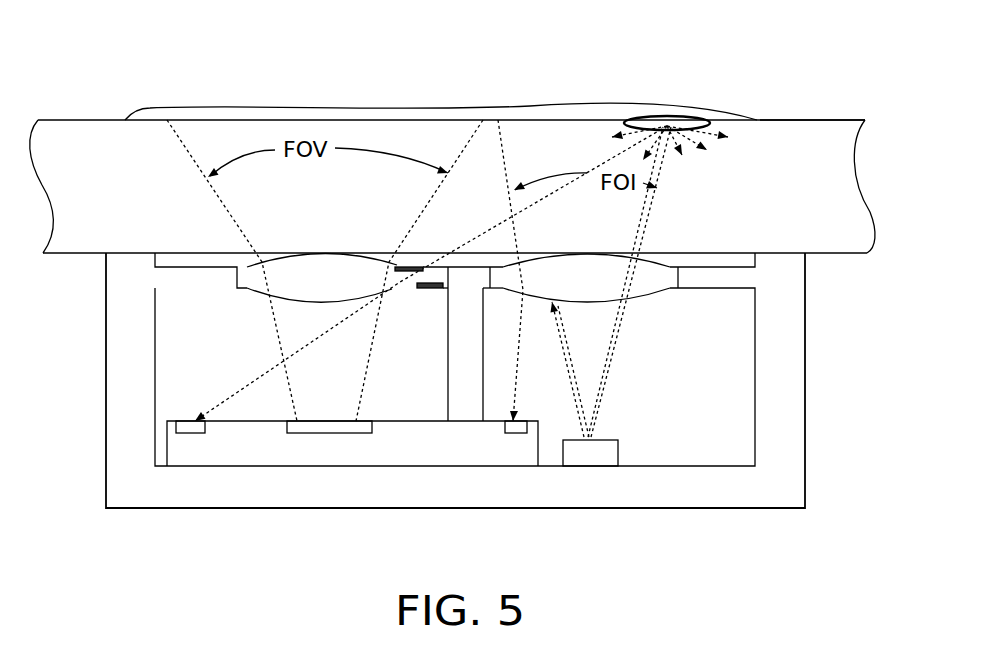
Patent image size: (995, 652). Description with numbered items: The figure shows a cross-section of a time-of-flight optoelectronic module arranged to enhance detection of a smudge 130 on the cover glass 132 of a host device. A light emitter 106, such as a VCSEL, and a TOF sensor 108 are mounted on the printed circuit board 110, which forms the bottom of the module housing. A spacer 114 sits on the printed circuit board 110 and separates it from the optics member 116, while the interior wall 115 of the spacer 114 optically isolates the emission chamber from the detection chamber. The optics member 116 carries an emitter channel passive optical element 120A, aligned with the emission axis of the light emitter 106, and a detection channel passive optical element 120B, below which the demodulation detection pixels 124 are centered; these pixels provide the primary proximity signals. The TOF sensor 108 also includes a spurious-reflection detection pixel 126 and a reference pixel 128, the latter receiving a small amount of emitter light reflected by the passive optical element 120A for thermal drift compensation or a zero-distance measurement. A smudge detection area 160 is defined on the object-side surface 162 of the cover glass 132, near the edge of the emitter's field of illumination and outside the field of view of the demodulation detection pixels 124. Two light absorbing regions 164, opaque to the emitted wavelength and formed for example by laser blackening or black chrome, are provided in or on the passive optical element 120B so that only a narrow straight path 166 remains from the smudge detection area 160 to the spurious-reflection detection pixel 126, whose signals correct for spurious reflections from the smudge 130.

The light emitter 106 is at (603, 462).
The TOF sensor 108 is at (410, 455).
The printed circuit board 110 is at (720, 508).
The spacer 114 is at (106, 428).
The interior wall 115 is at (448, 370).
The optics member 116 is at (723, 290).
The emitter channel passive optical element 120A is at (600, 300).
The detection channel passive optical element 120B is at (287, 292).
The demodulation detection pixels 124 is at (325, 433).
The spurious-reflection detection pixel 126 is at (192, 433).
The reference pixel 128 is at (517, 433).
The smudge 130 is at (147, 110).
The cover glass 132 is at (867, 193).
The smudge detection area 160 is at (677, 118).
The object-side surface 162 is at (808, 120).
The light absorbing regions 164 is at (432, 283).
The narrow straight path 166 is at (543, 193).